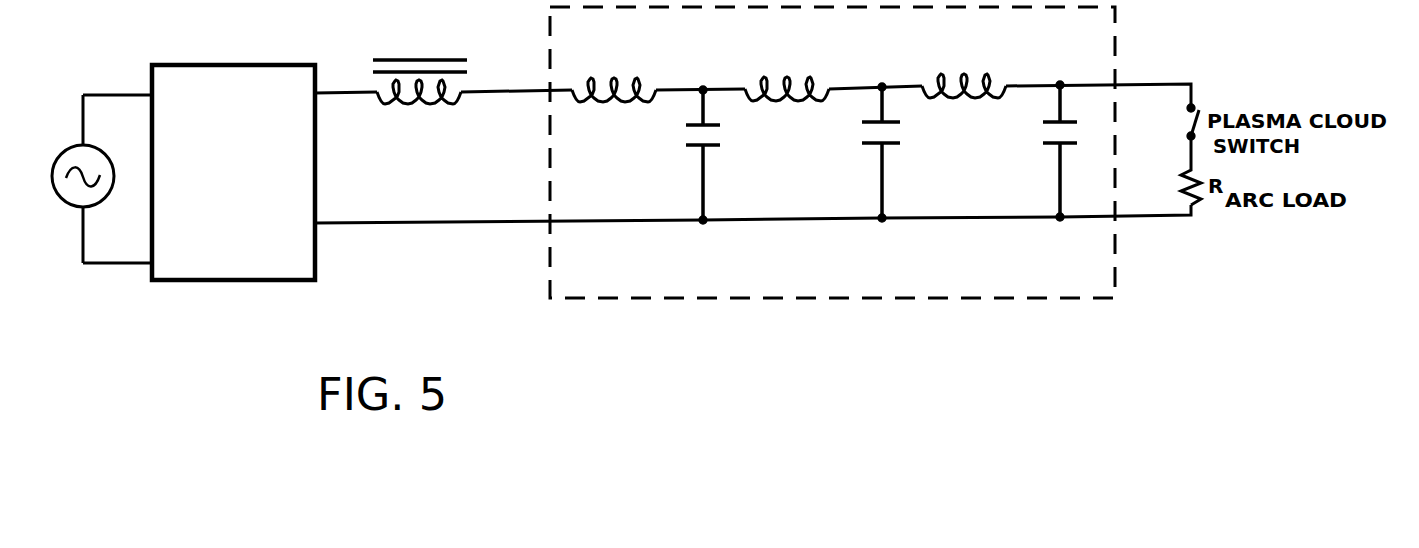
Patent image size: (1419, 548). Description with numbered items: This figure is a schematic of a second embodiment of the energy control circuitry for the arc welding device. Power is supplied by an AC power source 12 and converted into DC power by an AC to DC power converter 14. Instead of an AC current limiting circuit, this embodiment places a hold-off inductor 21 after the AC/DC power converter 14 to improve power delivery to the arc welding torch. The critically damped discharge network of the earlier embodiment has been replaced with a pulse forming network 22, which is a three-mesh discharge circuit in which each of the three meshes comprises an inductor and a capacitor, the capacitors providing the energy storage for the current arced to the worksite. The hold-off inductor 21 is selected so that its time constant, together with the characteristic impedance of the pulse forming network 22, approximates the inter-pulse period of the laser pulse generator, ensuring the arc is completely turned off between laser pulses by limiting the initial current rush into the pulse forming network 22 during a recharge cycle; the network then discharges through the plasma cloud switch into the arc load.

The AC power source 12 is at (91, 146).
The AC to DC power converter 14 is at (214, 282).
The hold-off inductor 21 is at (400, 59).
The pulse forming network 22 is at (636, 301).